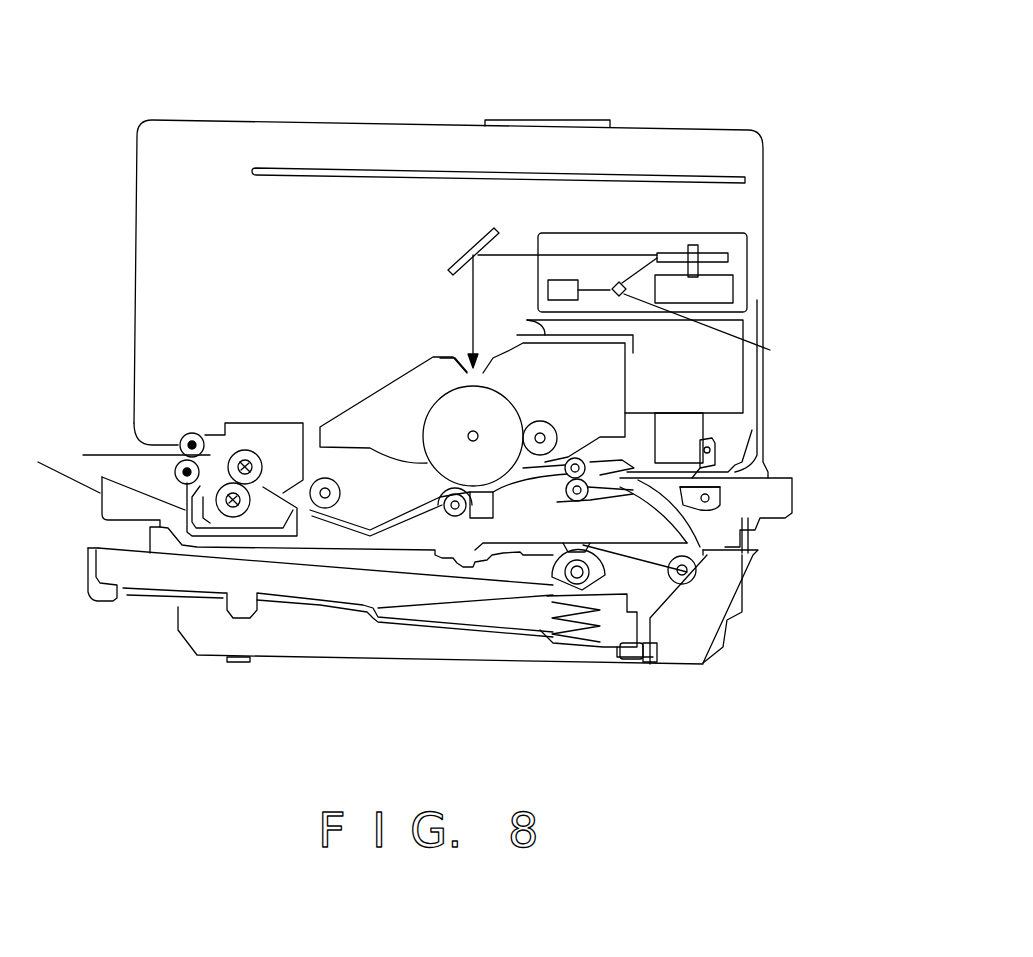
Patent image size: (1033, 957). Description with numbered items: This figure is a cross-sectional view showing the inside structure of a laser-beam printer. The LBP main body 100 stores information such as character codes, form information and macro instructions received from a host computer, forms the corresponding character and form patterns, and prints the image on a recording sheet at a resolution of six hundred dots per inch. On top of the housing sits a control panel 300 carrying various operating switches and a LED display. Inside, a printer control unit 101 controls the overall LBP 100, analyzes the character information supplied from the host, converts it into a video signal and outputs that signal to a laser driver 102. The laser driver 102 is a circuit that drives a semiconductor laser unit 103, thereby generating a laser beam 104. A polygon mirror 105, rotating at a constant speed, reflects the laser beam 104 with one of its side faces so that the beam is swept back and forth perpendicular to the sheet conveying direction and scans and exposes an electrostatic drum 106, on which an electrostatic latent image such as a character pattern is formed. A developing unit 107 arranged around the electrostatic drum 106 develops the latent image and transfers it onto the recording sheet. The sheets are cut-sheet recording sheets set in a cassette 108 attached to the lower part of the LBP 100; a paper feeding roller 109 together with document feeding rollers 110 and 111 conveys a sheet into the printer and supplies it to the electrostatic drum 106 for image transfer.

The LBP main body 100 is at (718, 128).
The control panel 300 is at (568, 119).
The printer control unit 101 is at (745, 178).
The laser driver 102 is at (548, 291).
The semiconductor laser unit 103 is at (720, 313).
The laser beam 104 is at (655, 233).
The polygon mirror 105 is at (728, 258).
The electrostatic drum 106 is at (455, 393).
The developing unit 107 is at (363, 423).
The cassette 108 is at (88, 562).
The paper feeding roller 109 is at (556, 585).
The document feeding roller 110 is at (683, 582).
The document feeding roller 111 is at (560, 505).